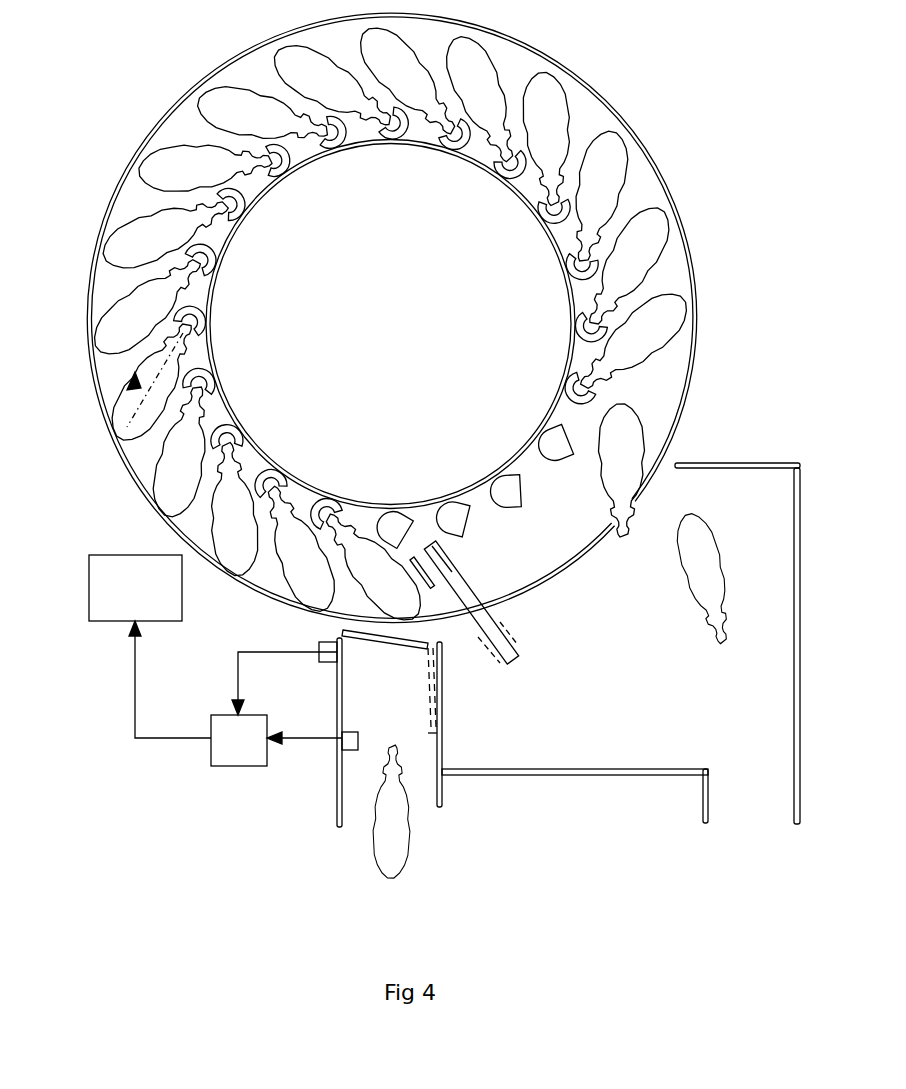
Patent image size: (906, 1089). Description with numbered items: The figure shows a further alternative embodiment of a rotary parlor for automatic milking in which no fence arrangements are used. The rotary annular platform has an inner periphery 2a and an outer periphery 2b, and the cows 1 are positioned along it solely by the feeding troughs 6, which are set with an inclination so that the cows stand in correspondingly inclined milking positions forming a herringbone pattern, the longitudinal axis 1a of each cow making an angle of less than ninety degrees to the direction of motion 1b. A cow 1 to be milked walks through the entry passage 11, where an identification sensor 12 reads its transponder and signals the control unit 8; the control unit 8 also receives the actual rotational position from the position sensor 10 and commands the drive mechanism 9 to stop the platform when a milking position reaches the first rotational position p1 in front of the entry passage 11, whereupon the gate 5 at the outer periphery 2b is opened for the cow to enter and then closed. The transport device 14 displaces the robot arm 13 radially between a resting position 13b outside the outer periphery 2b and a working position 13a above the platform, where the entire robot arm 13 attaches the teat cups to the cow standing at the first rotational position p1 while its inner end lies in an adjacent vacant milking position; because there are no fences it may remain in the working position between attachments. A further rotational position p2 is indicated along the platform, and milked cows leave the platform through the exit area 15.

The cow 1 is at (377, 848).
The longitudinal axis of the animal 1a is at (130, 418).
The direction of motion of the animals 1b is at (140, 393).
The inner periphery 2a is at (250, 437).
The outer periphery 2b is at (108, 193).
The gate 5 is at (388, 638).
The feeding trough 6 is at (197, 328).
The control unit 8 is at (230, 747).
The drive mechanism 9 is at (135, 588).
The position sensor 10 is at (330, 653).
The entry passage 11 is at (415, 767).
The identification sensor 12 is at (350, 737).
The robot arm 13 is at (415, 558).
The working position 13a is at (450, 565).
The resting position 13b is at (485, 652).
The transport device 14 is at (515, 655).
The exit area 15 is at (719, 711).
The first rotational position p1 is at (385, 588).
The position 2 p2 is at (300, 565).